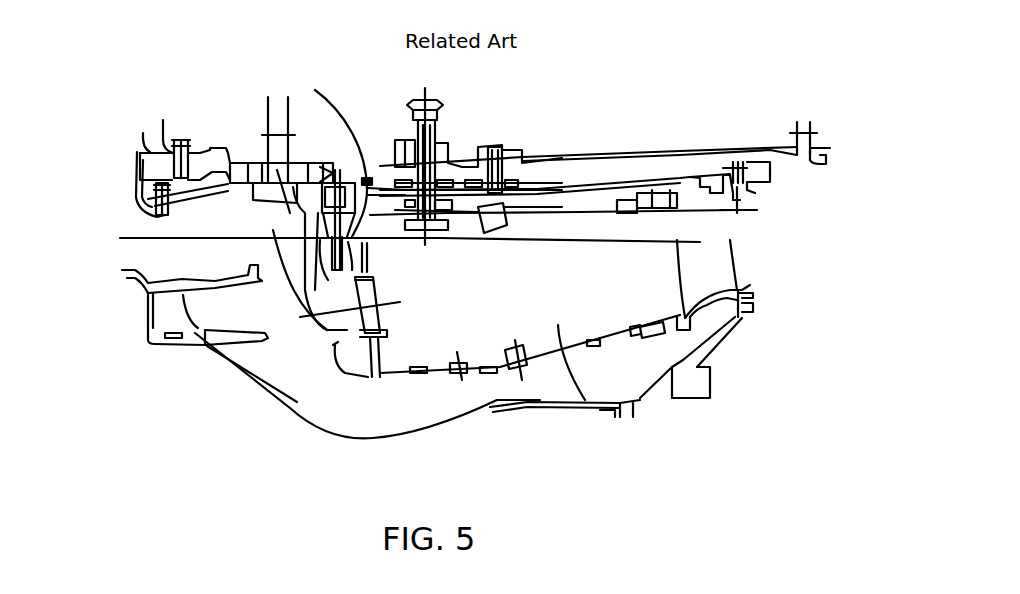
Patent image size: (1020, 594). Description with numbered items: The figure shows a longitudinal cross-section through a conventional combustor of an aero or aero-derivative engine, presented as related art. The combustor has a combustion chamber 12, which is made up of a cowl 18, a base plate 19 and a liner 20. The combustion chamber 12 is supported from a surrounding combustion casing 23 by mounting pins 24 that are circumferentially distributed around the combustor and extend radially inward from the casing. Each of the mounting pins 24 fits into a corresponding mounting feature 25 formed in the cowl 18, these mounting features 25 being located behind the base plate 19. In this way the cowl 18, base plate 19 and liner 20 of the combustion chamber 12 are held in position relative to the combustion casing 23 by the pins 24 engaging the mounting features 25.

The combustion chamber 12 is at (633, 410).
The cowl 18 is at (368, 377).
The base plate 19 is at (387, 340).
The liner 20 is at (592, 193).
The combustion casing 23 is at (553, 187).
The mounting pins 24 is at (440, 228).
The mounting features 25 is at (340, 118).